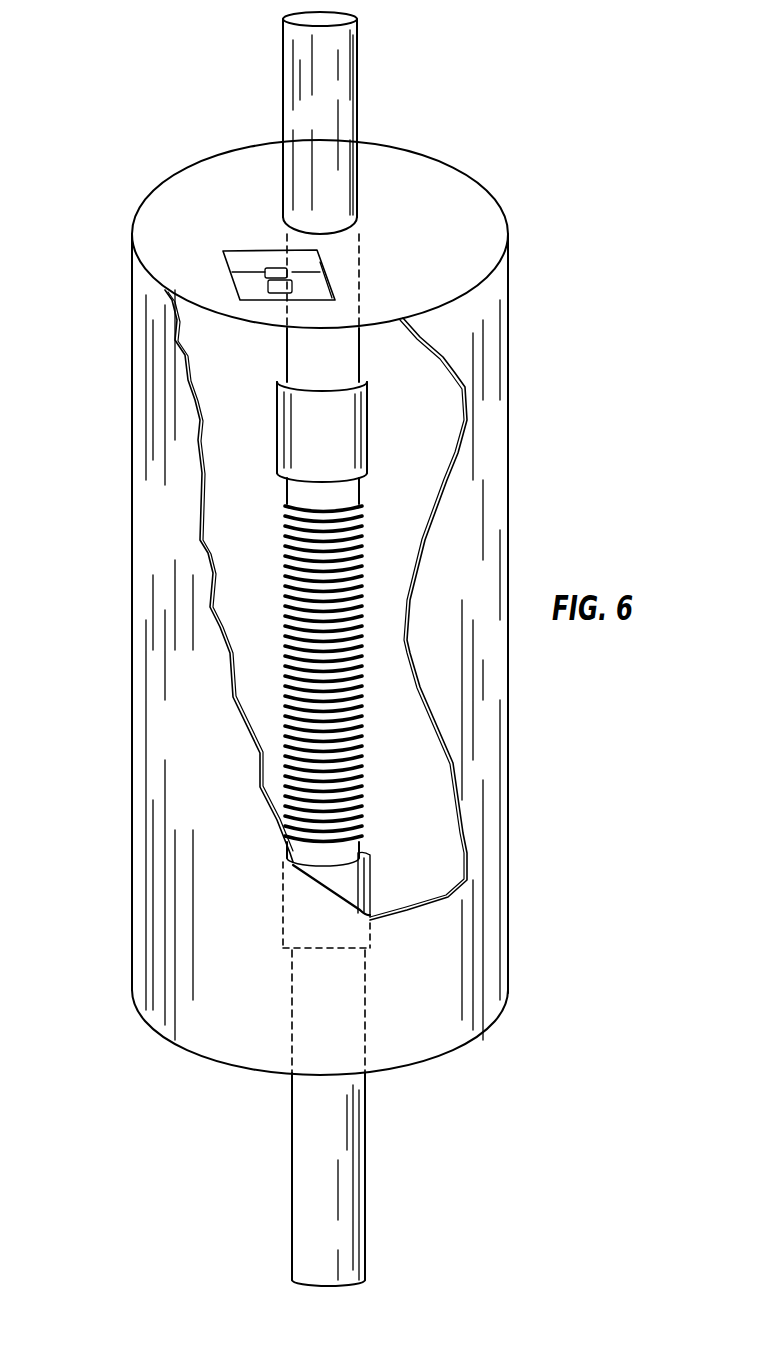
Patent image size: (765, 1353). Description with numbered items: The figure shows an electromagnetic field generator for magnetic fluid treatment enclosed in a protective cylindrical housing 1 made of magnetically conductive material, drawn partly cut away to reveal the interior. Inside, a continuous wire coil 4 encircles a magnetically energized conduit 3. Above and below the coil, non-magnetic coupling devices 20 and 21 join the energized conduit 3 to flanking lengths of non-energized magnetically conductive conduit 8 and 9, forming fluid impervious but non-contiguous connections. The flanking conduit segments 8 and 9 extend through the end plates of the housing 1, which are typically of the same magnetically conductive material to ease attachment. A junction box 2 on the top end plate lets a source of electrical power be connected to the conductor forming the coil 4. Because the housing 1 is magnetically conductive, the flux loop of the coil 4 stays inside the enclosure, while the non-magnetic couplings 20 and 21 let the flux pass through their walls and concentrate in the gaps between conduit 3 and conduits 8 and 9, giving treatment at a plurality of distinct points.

The cylindrical housing 1 is at (157, 395).
The junction box 2 is at (270, 270).
The magnetically energized conduit 3 is at (343, 487).
The wire coil 4 is at (310, 527).
The flanking conduit segment 8 is at (357, 77).
The flanking conduit segment 9 is at (318, 1162).
The non-magnetic coupling device 20 is at (335, 428).
The non-magnetic coupling device 21 is at (337, 878).